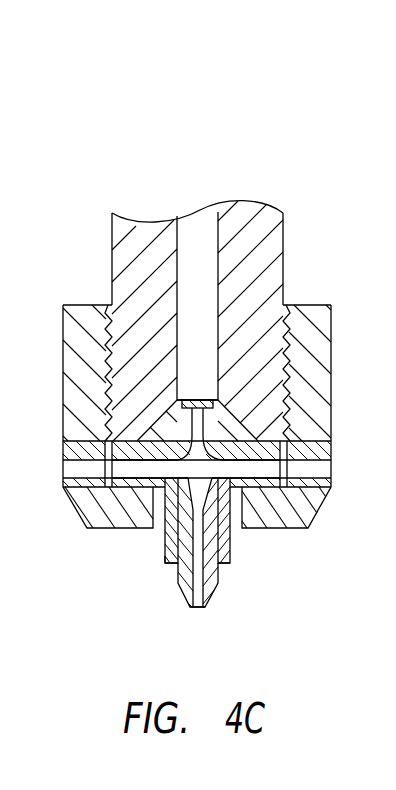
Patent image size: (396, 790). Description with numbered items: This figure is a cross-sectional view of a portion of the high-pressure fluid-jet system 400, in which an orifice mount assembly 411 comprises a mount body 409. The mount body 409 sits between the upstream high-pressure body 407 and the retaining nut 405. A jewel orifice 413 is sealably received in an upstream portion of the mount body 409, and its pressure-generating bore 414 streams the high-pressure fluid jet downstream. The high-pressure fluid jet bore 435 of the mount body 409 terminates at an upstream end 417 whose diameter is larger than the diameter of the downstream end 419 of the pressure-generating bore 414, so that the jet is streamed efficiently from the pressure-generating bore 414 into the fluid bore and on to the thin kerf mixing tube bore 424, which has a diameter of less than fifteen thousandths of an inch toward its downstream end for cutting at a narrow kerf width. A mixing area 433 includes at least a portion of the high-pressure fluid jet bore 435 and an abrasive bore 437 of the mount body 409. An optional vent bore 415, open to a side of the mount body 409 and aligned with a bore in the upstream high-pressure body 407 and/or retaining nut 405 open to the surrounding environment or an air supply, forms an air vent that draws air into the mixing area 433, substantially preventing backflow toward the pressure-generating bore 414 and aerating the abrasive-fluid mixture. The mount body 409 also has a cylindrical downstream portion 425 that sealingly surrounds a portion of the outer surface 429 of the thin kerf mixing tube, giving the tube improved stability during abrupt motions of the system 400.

The high-pressure fluid-jet system 400 is at (281, 139).
The retaining nut 405 is at (78, 352).
The upstream high-pressure body 407 is at (265, 228).
The mount body 409 is at (163, 543).
The orifice mount assembly 411 is at (161, 578).
The jewel orifice 413 is at (210, 404).
The pressure-generating bore 414 is at (197, 392).
The vent bore 415 is at (246, 448).
The upstream end 417 is at (188, 426).
The downstream end 419 is at (208, 391).
The thin kerf mixing tube bore 424 is at (197, 603).
The cylindrical downstream portion 425 is at (165, 556).
The outer surface 429 is at (236, 546).
The mixing area 433 is at (246, 514).
The high-pressure fluid jet bore 435 is at (193, 452).
The abrasive bore 437 is at (248, 468).